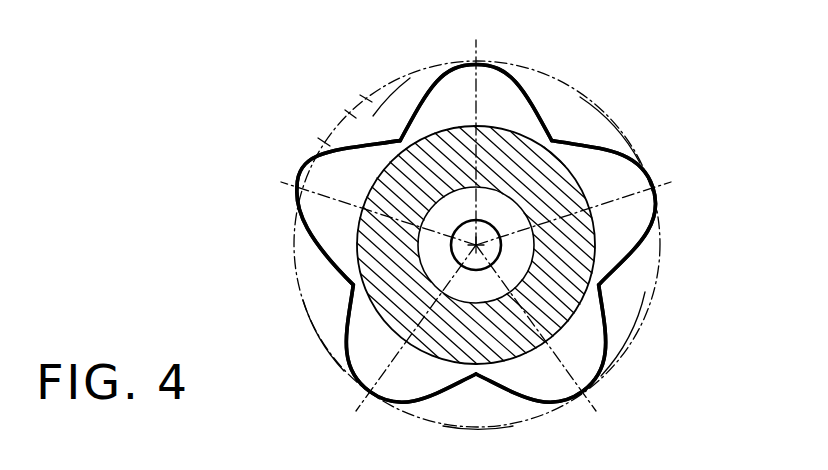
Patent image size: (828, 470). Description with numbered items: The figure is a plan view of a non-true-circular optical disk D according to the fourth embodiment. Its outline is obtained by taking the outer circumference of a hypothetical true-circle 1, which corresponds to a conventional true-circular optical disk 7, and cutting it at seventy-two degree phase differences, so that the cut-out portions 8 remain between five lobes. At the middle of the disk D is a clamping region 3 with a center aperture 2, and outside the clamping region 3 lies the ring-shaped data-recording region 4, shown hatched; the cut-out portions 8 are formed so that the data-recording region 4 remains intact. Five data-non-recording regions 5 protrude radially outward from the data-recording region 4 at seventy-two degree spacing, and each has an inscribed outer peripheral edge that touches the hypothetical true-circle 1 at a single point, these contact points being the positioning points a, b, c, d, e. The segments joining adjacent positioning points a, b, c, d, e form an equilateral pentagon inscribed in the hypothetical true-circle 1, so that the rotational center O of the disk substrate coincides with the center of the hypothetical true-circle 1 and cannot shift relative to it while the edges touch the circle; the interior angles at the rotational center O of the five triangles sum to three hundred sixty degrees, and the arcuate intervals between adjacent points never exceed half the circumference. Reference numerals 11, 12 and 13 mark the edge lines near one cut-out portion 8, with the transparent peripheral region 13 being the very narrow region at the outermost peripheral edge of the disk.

The hypothetical true-circle 1 is at (540, 76).
The center aperture 2 is at (500, 252).
The clamping region 3 is at (526, 270).
The data-recording region 4 is at (580, 303).
The data-non-recording region 5 is at (448, 82).
The true-circular optical disk 7 is at (563, 118).
The cut-out portion 8 is at (396, 104).
The pitch circle line 11 is at (368, 97).
The arc line 12 is at (349, 113).
The transparent peripheral region 13 is at (322, 143).
The non-true-circular optical disk D is at (637, 137).
The rotational center O is at (476, 225).
The positioning point a is at (480, 68).
The positioning point b is at (657, 185).
The positioning point c is at (582, 403).
The positioning point d is at (360, 394).
The positioning point e is at (298, 187).